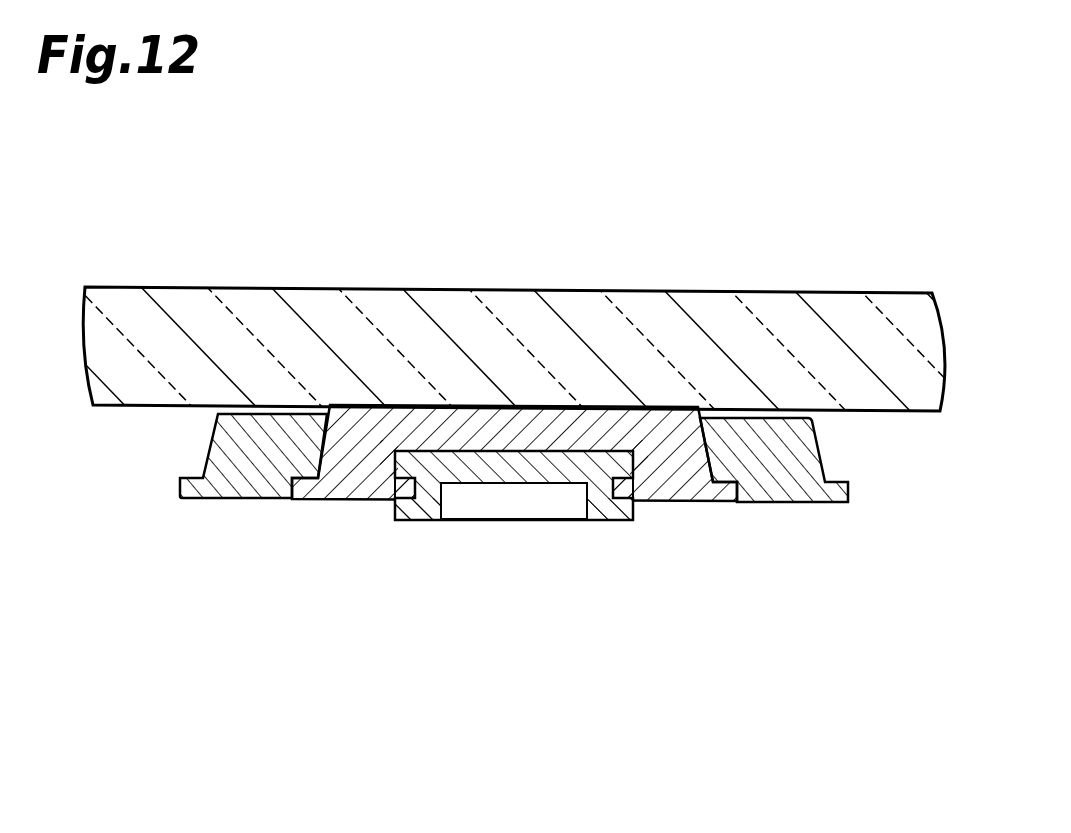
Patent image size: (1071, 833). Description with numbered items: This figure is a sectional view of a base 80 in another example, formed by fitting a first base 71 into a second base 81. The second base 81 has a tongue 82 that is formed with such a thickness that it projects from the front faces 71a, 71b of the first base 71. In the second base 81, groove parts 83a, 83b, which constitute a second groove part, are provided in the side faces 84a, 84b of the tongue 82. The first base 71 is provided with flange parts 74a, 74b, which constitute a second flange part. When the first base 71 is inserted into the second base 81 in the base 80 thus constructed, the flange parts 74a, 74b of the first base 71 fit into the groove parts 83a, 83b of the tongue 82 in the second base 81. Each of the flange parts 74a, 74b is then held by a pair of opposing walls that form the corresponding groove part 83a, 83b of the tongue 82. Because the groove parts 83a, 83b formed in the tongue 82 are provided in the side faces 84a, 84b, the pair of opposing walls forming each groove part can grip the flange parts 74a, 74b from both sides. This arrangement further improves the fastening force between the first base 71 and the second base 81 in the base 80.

The base 80 is at (526, 490).
The second base 81 is at (514, 410).
The first base 71 is at (549, 392).
The front face 71a is at (674, 503).
The front face 71b is at (318, 500).
The tongue 82 is at (503, 447).
The groove part 83a is at (630, 486).
The groove part 83b is at (398, 490).
The side face 84a is at (637, 466).
The side face 84b is at (394, 470).
The flange part 74a is at (618, 510).
The flange part 74b is at (400, 501).